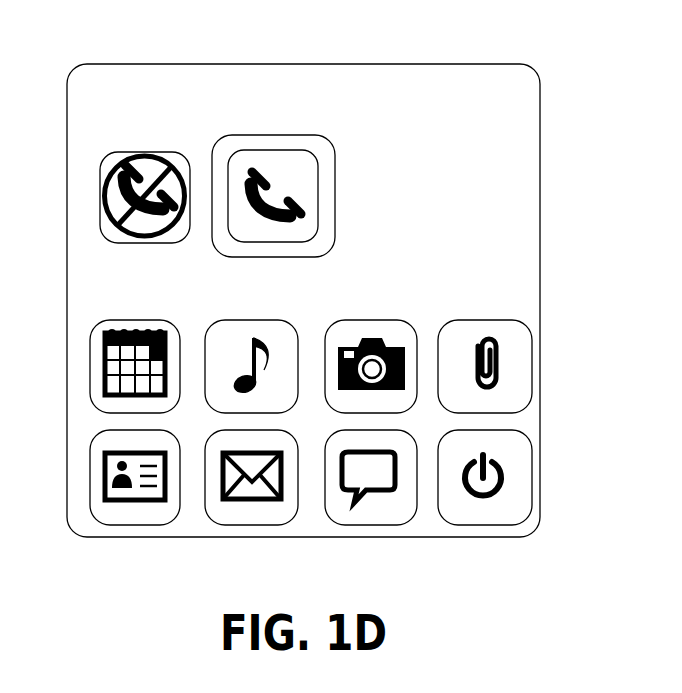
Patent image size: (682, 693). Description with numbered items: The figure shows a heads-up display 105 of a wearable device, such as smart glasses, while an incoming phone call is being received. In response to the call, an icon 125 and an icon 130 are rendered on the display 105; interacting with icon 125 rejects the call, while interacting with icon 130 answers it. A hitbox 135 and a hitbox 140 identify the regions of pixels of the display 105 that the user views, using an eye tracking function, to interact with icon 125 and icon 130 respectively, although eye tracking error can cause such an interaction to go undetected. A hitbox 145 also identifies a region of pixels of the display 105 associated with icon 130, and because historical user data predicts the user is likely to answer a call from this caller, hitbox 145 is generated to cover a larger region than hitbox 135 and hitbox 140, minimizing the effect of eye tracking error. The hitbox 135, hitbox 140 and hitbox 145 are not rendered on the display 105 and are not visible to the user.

The display 105 is at (489, 57).
The icon 125 is at (103, 167).
The icon 130 is at (281, 186).
The hitbox 135 is at (99, 213).
The hitbox 140 is at (319, 217).
The hitbox 145 is at (299, 263).